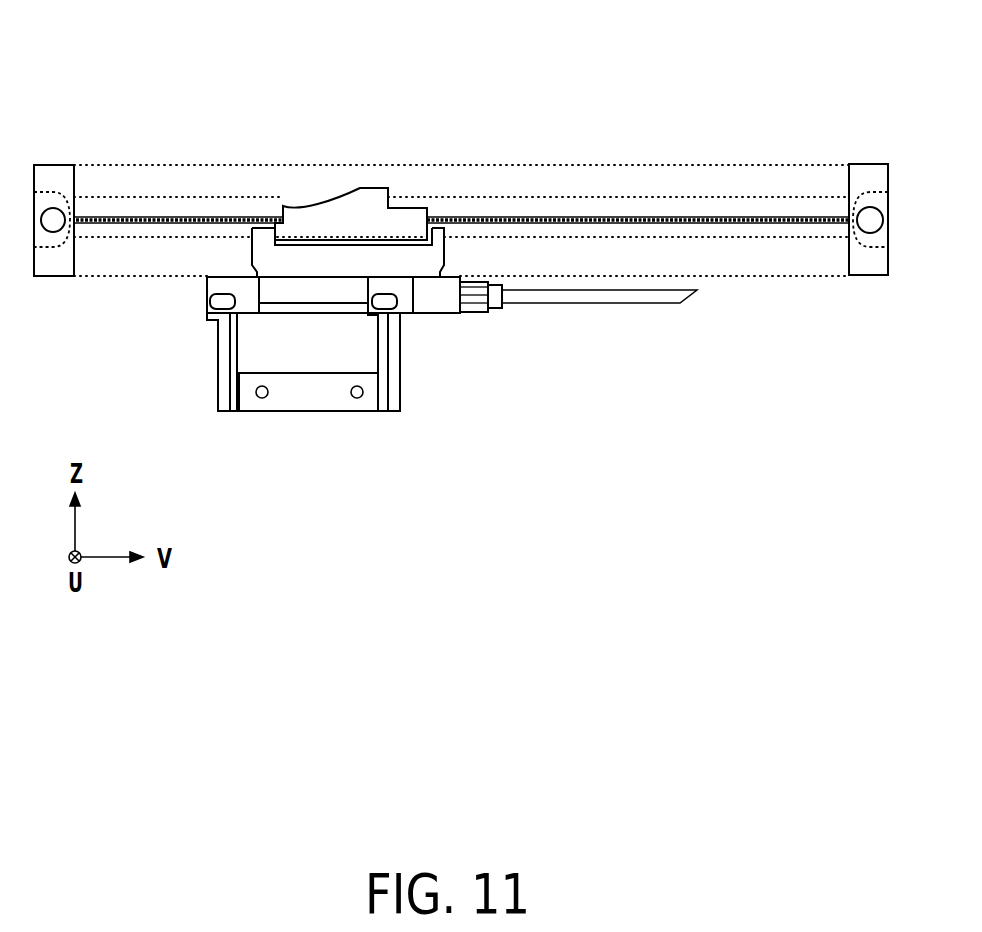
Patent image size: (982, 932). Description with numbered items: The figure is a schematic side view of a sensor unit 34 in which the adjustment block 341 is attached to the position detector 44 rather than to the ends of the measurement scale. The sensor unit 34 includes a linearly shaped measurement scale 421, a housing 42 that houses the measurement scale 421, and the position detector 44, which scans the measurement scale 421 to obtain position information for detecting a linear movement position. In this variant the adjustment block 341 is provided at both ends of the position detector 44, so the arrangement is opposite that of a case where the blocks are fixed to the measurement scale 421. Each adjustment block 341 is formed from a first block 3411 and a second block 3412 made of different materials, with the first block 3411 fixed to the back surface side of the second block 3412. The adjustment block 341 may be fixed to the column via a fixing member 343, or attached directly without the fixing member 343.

The sensor unit 34 is at (433, 36).
The housing 42 is at (140, 275).
The measurement scale 421 is at (578, 218).
The position detector 44 is at (287, 310).
The adjustment block 341 is at (222, 437).
The first block 3411 is at (235, 407).
The second block 3412 is at (218, 400).
The fixing member 343 is at (339, 408).